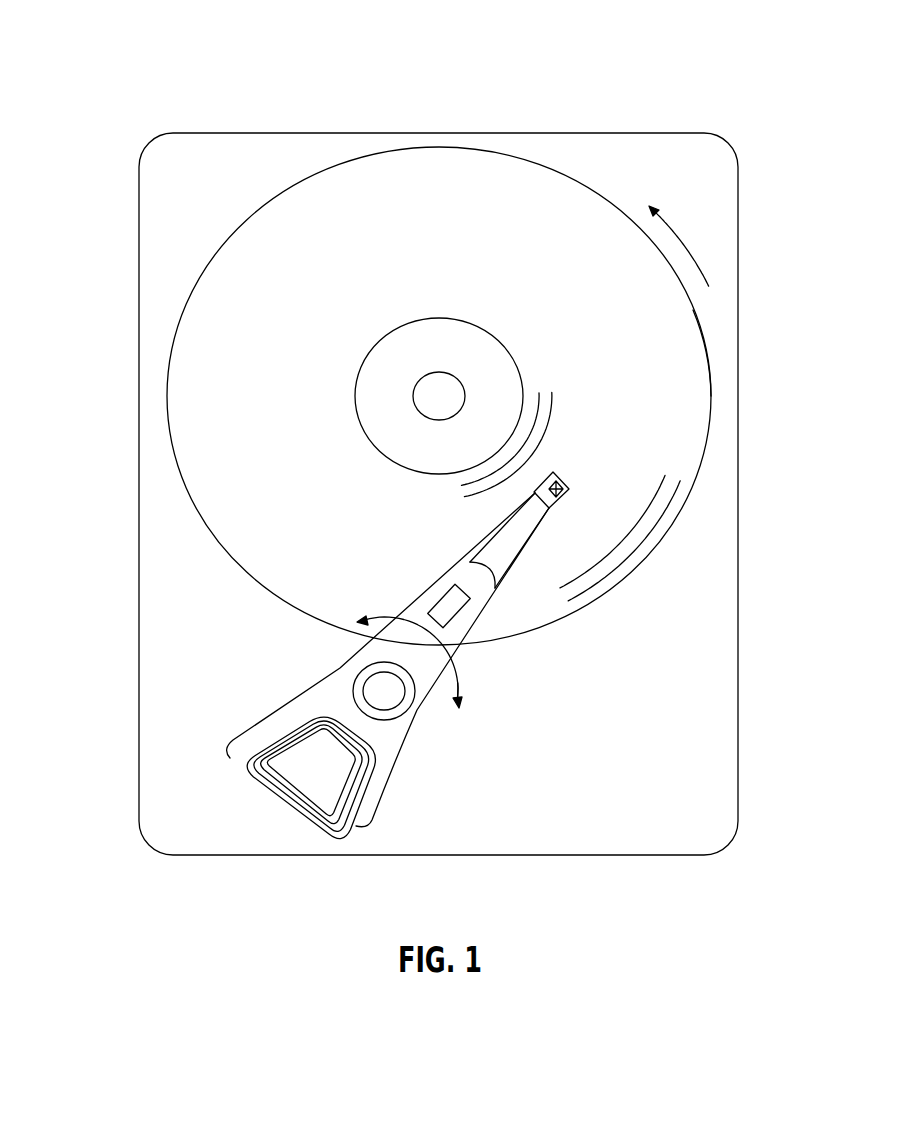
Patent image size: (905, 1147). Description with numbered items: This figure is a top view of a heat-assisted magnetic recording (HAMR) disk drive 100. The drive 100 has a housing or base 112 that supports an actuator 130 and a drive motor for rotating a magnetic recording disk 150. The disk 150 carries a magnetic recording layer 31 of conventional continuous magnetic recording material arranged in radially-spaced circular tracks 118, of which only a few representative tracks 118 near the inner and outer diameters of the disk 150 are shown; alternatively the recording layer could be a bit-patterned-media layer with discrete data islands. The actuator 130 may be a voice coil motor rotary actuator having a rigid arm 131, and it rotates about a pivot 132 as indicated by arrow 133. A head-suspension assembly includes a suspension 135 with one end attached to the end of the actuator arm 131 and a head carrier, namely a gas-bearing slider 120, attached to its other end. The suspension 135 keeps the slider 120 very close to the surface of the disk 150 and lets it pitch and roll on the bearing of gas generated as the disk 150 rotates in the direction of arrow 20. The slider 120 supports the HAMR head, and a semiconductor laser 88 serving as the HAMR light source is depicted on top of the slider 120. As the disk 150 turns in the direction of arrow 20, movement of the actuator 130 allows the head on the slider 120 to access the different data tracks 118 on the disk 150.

The HAMR disk drive 100 is at (139, 54).
The housing or base 112 is at (663, 132).
The disk 150 is at (297, 184).
The arrow 20 is at (676, 231).
The magnetic recording layer 31 is at (687, 363).
The tracks 118 is at (531, 383).
The actuator 130 is at (232, 742).
The suspension 135 is at (483, 550).
The pivot 132 is at (373, 687).
The arm 131 is at (427, 602).
The arrow 133 is at (463, 673).
The gas-bearing slider 120 is at (562, 498).
The semiconductor laser 88 is at (562, 488).